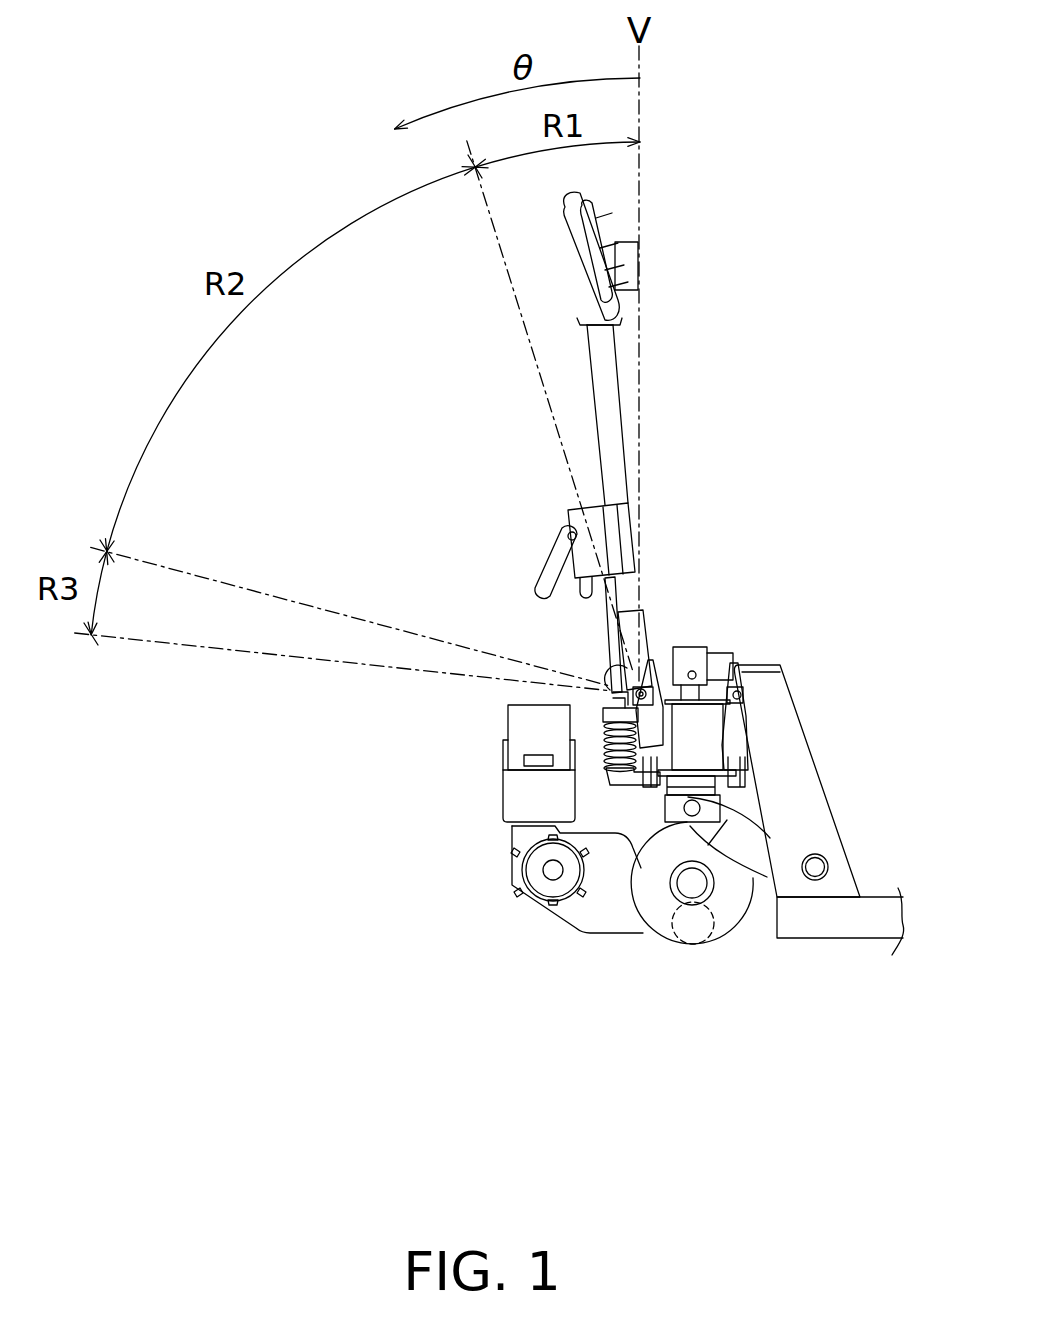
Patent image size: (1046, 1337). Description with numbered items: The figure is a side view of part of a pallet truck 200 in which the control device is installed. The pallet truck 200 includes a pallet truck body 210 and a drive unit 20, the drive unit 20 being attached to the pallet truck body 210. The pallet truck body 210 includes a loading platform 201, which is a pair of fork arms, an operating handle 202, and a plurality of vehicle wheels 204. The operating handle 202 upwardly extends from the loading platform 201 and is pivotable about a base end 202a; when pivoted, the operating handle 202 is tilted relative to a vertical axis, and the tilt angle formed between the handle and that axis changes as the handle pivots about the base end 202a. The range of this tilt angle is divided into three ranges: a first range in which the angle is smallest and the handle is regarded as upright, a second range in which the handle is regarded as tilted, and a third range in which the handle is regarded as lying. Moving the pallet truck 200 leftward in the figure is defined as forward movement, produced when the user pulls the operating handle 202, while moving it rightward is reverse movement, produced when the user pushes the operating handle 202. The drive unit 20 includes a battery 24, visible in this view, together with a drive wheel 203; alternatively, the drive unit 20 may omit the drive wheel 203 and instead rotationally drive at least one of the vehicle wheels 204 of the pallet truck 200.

The pallet truck 200 is at (823, 473).
The loading platform 201 is at (887, 942).
The operating handle 202 is at (573, 243).
The base end 202a is at (648, 690).
The drive wheel 203 is at (656, 935).
The vehicle wheels 204 is at (735, 925).
The drive unit 20 is at (550, 928).
The battery 24 is at (517, 728).
The pallet truck body 210 is at (802, 713).